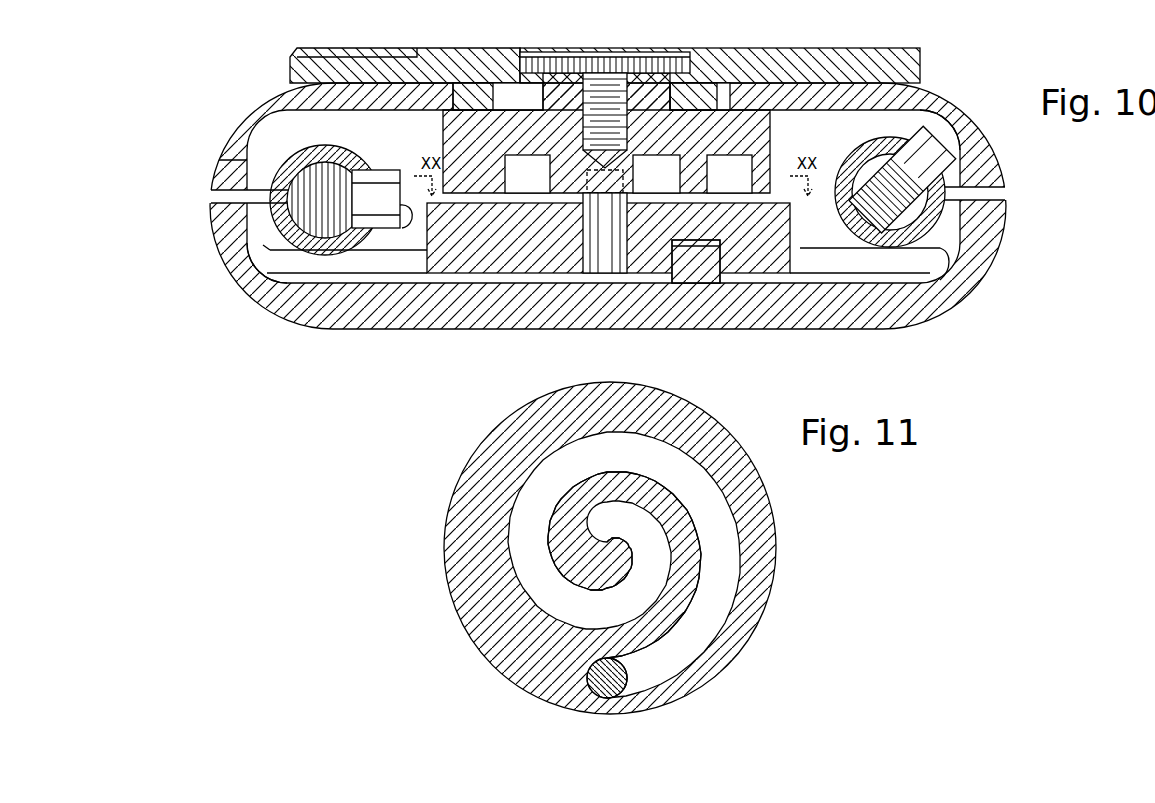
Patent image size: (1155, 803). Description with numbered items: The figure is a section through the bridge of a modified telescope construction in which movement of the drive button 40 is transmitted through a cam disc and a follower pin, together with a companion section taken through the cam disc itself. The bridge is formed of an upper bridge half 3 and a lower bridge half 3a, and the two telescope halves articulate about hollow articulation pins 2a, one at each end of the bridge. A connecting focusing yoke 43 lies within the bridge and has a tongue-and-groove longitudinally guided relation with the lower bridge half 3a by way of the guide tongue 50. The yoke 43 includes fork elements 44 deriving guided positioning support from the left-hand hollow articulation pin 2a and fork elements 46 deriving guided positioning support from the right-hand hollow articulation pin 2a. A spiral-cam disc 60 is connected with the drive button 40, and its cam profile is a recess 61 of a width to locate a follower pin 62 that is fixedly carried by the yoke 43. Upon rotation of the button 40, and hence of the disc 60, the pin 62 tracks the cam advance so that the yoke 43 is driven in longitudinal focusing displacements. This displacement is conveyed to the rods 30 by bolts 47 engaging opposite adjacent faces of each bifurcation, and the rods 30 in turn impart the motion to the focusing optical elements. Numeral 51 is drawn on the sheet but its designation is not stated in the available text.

In FIG. 10, the upper bridge half 3 is at (236, 138).
In FIG. 10, the lower bridge half 3a is at (248, 265).
In FIG. 10, the hollow articulation pin 2a is at (285, 167).
In FIG. 10, the rod 30 is at (310, 227).
In FIG. 10, the drive button 40 is at (712, 62).
In FIG. 10, the focusing yoke 43 is at (497, 262).
In FIG. 10, the fork element 44 is at (263, 270).
In FIG. 10, the fork element 46 is at (945, 283).
In FIG. 10, the bolt 47 is at (402, 208).
In FIG. 10, the guide tongue 50 is at (690, 262).
In FIG. 10, the cover plate portion 51 is at (397, 50).
In FIG. 10, the spiral-cam disc 60 is at (516, 118).
In FIG. 11, the spiral-cam disc 60 is at (448, 572).
In FIG. 10, the recess 61 is at (520, 175).
In FIG. 11, the recess 61 is at (735, 573).
In FIG. 10, the follower pin 62 is at (608, 260).
In FIG. 11, the follower pin 62 is at (614, 692).